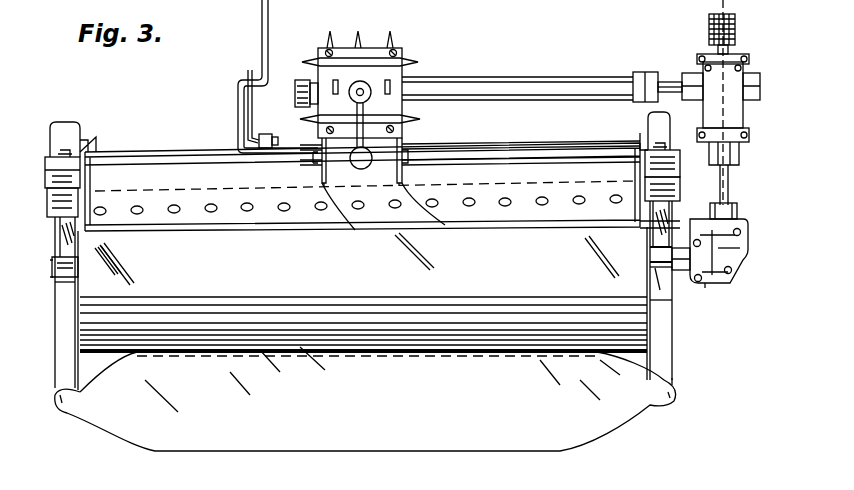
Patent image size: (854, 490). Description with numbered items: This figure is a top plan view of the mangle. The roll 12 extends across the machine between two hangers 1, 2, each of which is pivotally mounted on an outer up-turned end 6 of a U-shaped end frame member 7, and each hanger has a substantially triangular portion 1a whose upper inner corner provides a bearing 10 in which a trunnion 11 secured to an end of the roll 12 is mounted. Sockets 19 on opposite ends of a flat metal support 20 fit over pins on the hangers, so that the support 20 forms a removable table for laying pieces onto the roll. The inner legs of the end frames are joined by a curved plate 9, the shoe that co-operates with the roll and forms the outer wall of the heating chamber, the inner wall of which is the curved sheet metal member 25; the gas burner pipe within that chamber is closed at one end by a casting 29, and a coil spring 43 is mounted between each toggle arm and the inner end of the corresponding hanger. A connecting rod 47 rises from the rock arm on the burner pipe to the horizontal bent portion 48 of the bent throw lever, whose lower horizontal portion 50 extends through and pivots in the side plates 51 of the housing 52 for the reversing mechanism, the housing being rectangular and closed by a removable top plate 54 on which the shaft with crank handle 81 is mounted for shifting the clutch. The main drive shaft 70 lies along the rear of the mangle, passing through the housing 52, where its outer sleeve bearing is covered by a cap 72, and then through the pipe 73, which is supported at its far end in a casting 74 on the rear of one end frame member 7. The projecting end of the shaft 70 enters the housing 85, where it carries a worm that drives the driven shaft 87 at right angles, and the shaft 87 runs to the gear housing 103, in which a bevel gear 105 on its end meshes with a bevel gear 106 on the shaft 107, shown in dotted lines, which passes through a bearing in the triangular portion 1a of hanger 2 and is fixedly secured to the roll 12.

The hanger 1 is at (62, 232).
The triangular portion 1a is at (60, 318).
The hanger 2 is at (658, 236).
The outer up-turned end 6 is at (435, 472).
The U-shaped end frame member 7 is at (686, 288).
The curved plate 9 is at (277, 95).
The bearing 10 is at (80, 256).
The trunnion 11 is at (44, 276).
The roll 12 is at (379, 277).
The socket 19 is at (60, 404).
The flat metal support 20 is at (365, 401).
The curved sheet metal member 25 is at (542, 160).
The casting 29 is at (56, 284).
The coil spring 43 is at (60, 165).
The connecting rod 47 is at (248, 118).
The horizontal bent portion 48 is at (249, 70).
The horizontal portion 50 is at (238, 145).
The side plate 51 is at (445, 228).
The housing 52 is at (355, 38).
The removable top plate 54 is at (400, 76).
The main drive shaft 70 is at (670, 80).
The cap 72 is at (300, 80).
The pipe 73 is at (535, 77).
The casting 74 is at (644, 72).
The crank handle 81 is at (402, 134).
The housing 85 is at (730, 78).
The driven shaft 87 is at (752, 190).
The gear housing 103 is at (713, 282).
The bevel gear 105 is at (740, 248).
The bevel gear 106 is at (707, 284).
The shaft 107 is at (660, 267).